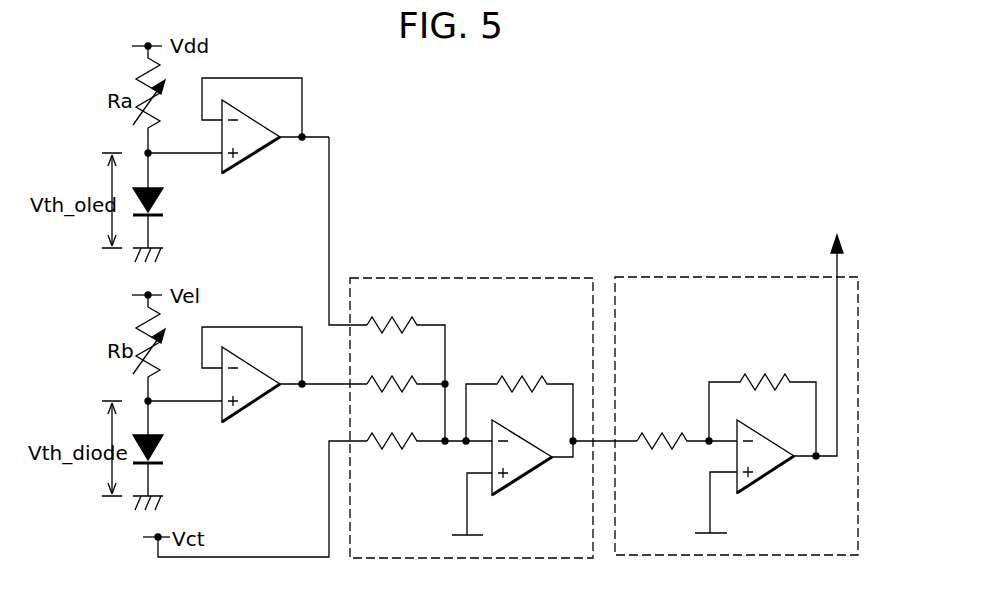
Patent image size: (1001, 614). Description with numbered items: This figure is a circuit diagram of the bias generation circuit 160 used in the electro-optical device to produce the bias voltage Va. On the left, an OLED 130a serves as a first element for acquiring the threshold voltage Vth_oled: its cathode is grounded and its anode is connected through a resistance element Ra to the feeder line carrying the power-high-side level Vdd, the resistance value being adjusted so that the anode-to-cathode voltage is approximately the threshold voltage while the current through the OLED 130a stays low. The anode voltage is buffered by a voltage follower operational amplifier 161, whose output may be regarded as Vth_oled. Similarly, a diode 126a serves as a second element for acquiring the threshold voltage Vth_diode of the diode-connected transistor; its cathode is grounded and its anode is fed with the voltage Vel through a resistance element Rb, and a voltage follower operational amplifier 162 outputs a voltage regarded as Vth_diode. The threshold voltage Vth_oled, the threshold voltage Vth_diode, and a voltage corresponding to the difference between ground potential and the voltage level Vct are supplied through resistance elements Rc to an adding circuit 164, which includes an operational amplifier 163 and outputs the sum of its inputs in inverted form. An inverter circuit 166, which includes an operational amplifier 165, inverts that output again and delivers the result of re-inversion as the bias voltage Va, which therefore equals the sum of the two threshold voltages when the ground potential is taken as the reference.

The bias generation circuit 160 is at (703, 82).
The voltage follower operational amplifier 161 is at (250, 155).
The voltage follower operational amplifier 162 is at (252, 403).
The operational amplifier 163 is at (523, 477).
The adding circuit 164 is at (471, 396).
The operational amplifier 165 is at (765, 475).
The inverter circuit 166 is at (736, 383).
The OLED 130a is at (160, 201).
The diode 126a is at (160, 449).